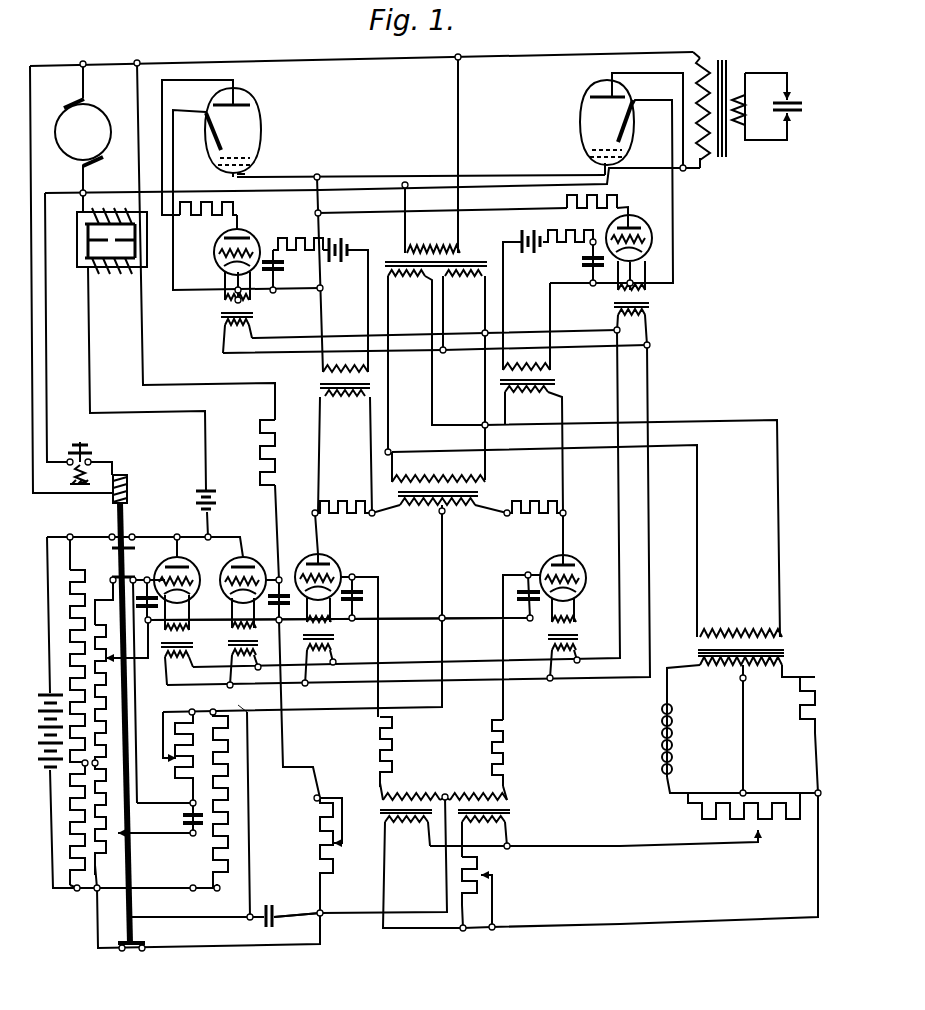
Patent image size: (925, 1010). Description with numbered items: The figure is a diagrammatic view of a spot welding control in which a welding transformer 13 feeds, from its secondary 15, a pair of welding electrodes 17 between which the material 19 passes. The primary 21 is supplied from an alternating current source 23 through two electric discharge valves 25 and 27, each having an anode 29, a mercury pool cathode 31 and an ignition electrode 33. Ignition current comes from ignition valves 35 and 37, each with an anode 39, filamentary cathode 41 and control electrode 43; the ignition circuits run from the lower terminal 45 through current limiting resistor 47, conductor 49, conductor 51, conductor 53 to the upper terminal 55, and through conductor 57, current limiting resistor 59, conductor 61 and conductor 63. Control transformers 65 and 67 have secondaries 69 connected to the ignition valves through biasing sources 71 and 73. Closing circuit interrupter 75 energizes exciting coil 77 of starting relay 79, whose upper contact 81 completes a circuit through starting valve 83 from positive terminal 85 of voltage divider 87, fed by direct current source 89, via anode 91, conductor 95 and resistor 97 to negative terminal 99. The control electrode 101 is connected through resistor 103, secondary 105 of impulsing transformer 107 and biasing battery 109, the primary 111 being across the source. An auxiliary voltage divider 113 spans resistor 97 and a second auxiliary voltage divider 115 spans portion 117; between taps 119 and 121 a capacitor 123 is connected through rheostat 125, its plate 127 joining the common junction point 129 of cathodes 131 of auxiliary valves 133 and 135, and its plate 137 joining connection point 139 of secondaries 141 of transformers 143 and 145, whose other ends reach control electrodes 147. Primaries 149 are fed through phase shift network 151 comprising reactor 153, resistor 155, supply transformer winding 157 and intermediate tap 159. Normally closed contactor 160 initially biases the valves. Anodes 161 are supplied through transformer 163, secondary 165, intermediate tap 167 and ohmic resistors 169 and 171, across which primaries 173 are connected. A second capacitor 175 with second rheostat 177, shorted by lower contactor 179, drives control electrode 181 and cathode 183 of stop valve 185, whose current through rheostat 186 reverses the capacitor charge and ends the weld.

The welding transformer 13 is at (706, 47).
The secondary 15 is at (784, 119).
The welding electrodes 17 is at (784, 97).
The material 19 is at (790, 126).
The primary 21 is at (697, 160).
The alternating current source 23 is at (96, 100).
The electric discharge valve 25 is at (262, 126).
The electric discharge valve 27 is at (580, 122).
The anode 29 is at (252, 103).
The mercury pool cathode 31 is at (250, 162).
The ignition electrode 33 is at (215, 150).
The ignition valve 35 is at (250, 233).
The ignition valve 37 is at (644, 230).
The anode 39 is at (220, 238).
The filamentary cathode 41 is at (222, 264).
The control electrode 43 is at (259, 246).
The lower terminal 45 is at (88, 166).
The current limiting resistor 47 is at (228, 210).
The conductor 49 is at (173, 130).
The conductor 51 is at (496, 176).
The conductor 53 is at (420, 58).
The upper terminal 55 is at (70, 101).
The conductor 57 is at (508, 207).
The current limiting resistor 59 is at (567, 200).
The conductor 61 is at (676, 262).
The conductor 63 is at (375, 189).
The control transformer 65 is at (294, 379).
The control transformer 67 is at (565, 379).
The secondaries 69 is at (333, 370).
The biasing source 71 is at (340, 236).
The biasing source 73 is at (538, 255).
The circuit interrupter 75 is at (64, 438).
The exciting coil 77 is at (128, 485).
The starting relay 79 is at (119, 462).
The upper contact 81 is at (110, 548).
The starting valve 83 is at (240, 569).
The positive terminal 85 is at (76, 536).
The voltage divider 87 is at (86, 614).
The direct current source 89 is at (33, 685).
The anode 91 is at (240, 548).
The conductor 95 is at (218, 690).
The resistor 97 is at (228, 790).
The negative terminal 99 is at (78, 911).
The control electrode 101 is at (262, 566).
The resistor 103 is at (262, 422).
The secondary 105 is at (92, 270).
The impulsing transformer 107 is at (102, 293).
The biasing battery 109 is at (217, 505).
The primary 111 is at (97, 209).
The auxiliary voltage divider 113 is at (300, 762).
The second auxiliary voltage divider 115 is at (108, 868).
The portion 117 is at (75, 882).
The adjustable tap 119 is at (316, 797).
The adjustable tap 121 is at (128, 836).
The capacitor 123 is at (271, 902).
The rheostat 125 is at (336, 860).
The plate 127 is at (262, 922).
The common junction point 129 is at (444, 617).
The cathodes 131 is at (310, 600).
The auxiliary valve 133 is at (322, 556).
The auxiliary valve 135 is at (546, 560).
The plate 137 is at (276, 922).
The connection point 139 is at (445, 794).
The secondaries 141 is at (445, 790).
The transformer 143 is at (462, 768).
The transformer 145 is at (398, 768).
The control electrode 147 is at (344, 575).
The primaries 149 is at (422, 832).
The phase shift network 151 is at (698, 705).
The reactor 153 is at (675, 722).
The resistor 155 is at (800, 710).
The supply transformer winding 157 is at (700, 664).
The intermediate tap 159 is at (748, 680).
The normally closed contactor 160 is at (146, 946).
The anodes 161 is at (342, 558).
The transformer 163 is at (470, 480).
The secondary 165 is at (456, 514).
The intermediate tap 167 is at (440, 512).
The ohmic resistor 169 is at (362, 508).
The ohmic resistor 171 is at (513, 503).
The primaries 173 is at (328, 401).
The second capacitor 175 is at (182, 820).
The second rheostat 177 is at (186, 782).
The lower contactor 179 is at (112, 577).
The control electrode 181 is at (158, 578).
The cathode 183 is at (166, 606).
The stop valve 185 is at (178, 558).
The rheostat 186 is at (108, 684).